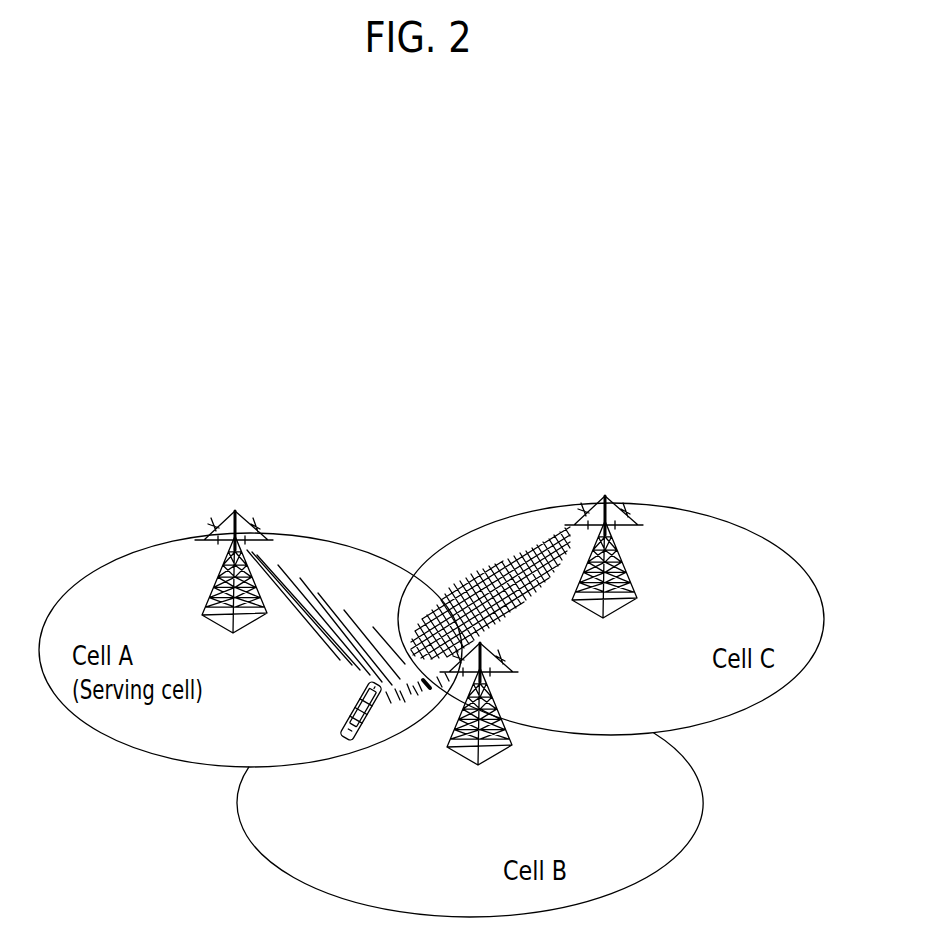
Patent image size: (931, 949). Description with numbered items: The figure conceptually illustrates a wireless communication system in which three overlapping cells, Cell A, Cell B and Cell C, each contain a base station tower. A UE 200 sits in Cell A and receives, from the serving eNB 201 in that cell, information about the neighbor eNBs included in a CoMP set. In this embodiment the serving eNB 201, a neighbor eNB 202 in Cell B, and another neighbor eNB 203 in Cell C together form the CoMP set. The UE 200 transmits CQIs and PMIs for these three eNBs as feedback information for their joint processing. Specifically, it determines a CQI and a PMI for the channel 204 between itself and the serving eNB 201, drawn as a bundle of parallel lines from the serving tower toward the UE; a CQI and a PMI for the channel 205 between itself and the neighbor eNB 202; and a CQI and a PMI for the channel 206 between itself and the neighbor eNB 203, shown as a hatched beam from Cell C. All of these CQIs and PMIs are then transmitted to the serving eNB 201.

The UE 200 is at (333, 714).
The serving eNB 201 is at (234, 590).
The neighbor eNB 202 is at (493, 717).
The neighbor eNB 203 is at (630, 557).
The channel 204 is at (300, 580).
The channel 205 is at (416, 677).
The channel 206 is at (503, 562).